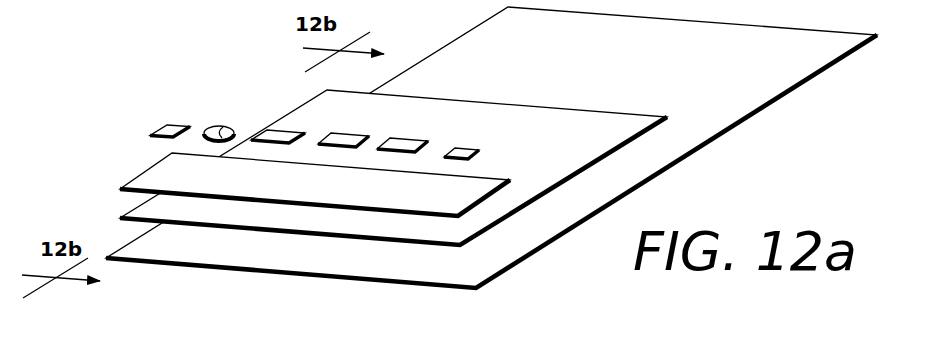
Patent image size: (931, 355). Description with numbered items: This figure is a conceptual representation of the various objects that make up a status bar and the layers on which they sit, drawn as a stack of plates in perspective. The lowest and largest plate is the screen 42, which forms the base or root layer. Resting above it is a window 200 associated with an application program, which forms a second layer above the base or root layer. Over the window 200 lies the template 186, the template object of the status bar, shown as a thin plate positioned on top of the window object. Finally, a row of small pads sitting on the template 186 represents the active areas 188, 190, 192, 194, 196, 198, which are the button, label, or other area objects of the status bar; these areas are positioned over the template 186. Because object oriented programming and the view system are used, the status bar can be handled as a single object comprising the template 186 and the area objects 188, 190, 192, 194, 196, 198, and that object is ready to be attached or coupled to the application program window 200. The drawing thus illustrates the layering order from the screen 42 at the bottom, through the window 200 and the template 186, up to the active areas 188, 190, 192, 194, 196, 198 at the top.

The screen 42 is at (788, 78).
The window 200 is at (516, 226).
The template 186 is at (320, 213).
The active area 188 is at (167, 128).
The active area 190 is at (218, 128).
The active area 192 is at (272, 132).
The active area 194 is at (357, 136).
The active area 196 is at (403, 146).
The active area 198 is at (453, 153).